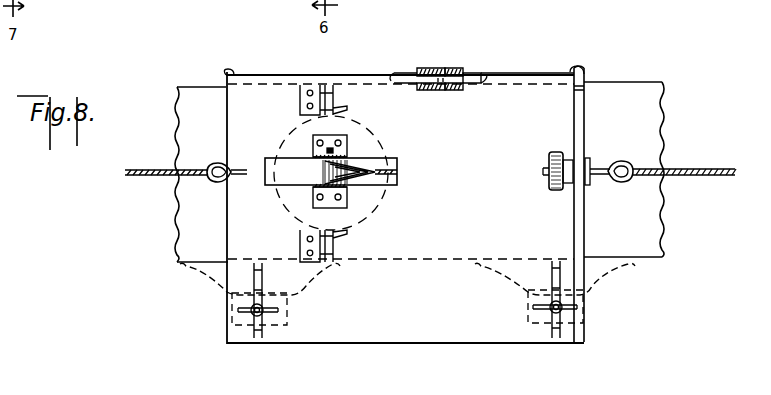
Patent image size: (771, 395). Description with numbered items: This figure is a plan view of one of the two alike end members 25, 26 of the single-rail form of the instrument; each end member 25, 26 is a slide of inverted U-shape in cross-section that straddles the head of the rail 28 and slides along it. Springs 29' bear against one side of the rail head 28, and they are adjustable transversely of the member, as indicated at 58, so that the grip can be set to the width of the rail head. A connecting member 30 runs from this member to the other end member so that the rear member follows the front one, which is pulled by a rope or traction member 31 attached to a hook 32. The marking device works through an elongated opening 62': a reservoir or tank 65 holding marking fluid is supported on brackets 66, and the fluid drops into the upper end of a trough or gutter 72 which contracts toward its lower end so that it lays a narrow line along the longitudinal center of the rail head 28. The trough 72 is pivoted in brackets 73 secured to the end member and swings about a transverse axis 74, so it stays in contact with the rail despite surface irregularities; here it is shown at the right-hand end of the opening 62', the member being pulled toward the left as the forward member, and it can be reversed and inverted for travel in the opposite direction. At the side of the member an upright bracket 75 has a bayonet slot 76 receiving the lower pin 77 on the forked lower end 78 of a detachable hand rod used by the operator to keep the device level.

The end member 25 is at (404, 204).
The end member 26 is at (404, 204).
The rail head 28 is at (652, 135).
The springs 29' is at (407, 283).
The connecting member 30 is at (703, 176).
The rope 31 is at (143, 177).
The hook 32 is at (238, 180).
The adjustment 58 is at (567, 308).
The opening 62' is at (320, 160).
The reservoir or tank 65 is at (386, 151).
The brackets 66 is at (334, 253).
The trough or gutter 72 is at (362, 181).
The brackets 73 is at (313, 203).
The axis 74 is at (343, 147).
The upright bracket 75 is at (470, 74).
The bayonet slot 76 is at (450, 67).
The lower pin 77 is at (440, 90).
The forked lower end 78 is at (425, 90).